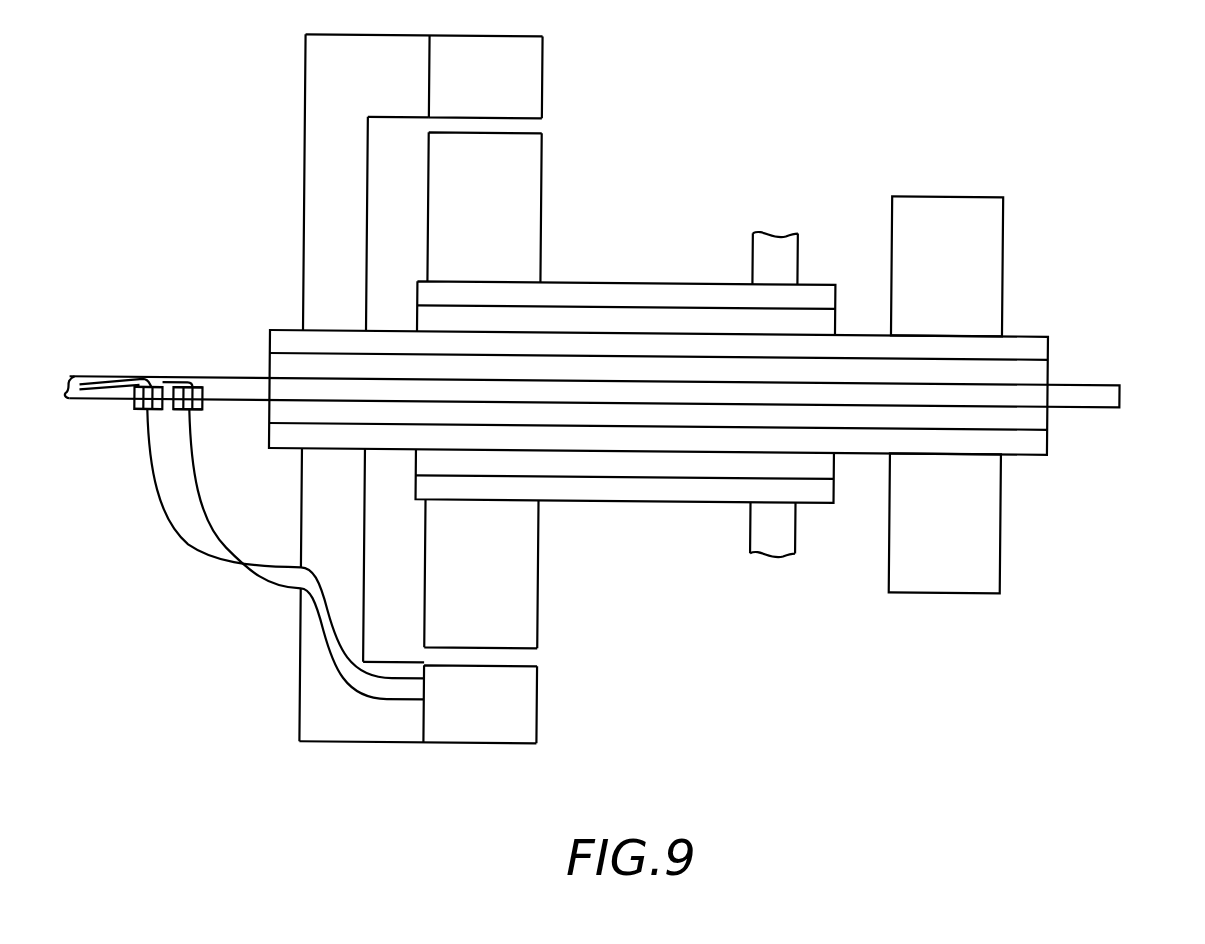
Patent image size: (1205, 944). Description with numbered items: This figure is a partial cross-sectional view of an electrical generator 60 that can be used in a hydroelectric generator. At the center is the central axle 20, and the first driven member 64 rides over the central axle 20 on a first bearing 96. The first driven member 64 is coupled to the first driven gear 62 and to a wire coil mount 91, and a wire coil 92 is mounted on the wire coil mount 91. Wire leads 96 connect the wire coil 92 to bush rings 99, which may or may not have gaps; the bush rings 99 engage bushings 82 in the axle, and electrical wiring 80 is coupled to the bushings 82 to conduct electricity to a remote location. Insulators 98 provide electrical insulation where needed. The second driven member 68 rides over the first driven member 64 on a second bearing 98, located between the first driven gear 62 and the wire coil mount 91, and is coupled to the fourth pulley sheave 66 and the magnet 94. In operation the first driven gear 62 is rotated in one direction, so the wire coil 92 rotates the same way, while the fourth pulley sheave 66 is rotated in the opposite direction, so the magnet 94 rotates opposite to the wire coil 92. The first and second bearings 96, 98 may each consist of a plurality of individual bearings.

The central axle 20 is at (1112, 389).
The electrical generator 60 is at (726, 74).
The first driven gear 62 is at (989, 229).
The first driven member 64 is at (1038, 338).
The fourth pulley sheave 66 is at (785, 253).
The second driven member 68 is at (821, 295).
The electrical wiring 80 is at (102, 383).
The bushings 82 is at (152, 386).
The wire coil mount 91 is at (310, 75).
The wire coil 92 is at (528, 76).
The magnet 94 is at (529, 192).
The first bearing 96 is at (1038, 365).
The second bearing 98 is at (821, 321).
The bush rings 99 is at (146, 418).